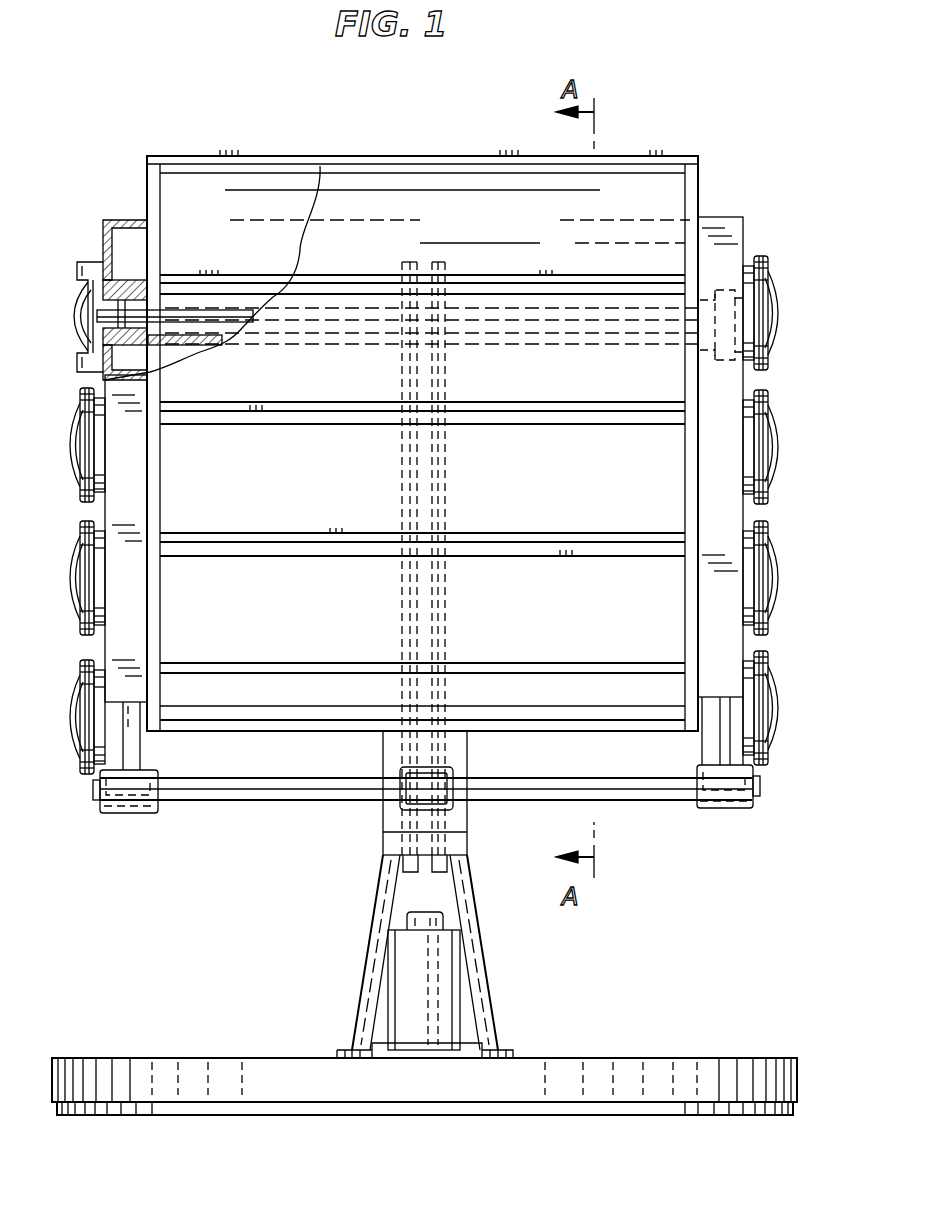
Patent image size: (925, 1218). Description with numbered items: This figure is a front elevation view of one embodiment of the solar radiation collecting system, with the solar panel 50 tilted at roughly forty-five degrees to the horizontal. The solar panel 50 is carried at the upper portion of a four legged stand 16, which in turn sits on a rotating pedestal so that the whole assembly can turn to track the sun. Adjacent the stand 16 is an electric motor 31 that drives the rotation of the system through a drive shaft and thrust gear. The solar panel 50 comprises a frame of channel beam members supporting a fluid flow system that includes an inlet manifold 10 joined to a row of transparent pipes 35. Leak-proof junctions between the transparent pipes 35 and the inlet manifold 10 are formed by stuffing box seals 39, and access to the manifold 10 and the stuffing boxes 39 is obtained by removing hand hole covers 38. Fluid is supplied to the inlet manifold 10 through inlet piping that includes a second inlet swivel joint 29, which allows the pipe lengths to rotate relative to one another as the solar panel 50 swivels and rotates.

The inlet manifold 10 is at (104, 645).
The four legged stand 16 is at (479, 931).
The second inlet swivel joint 29 is at (102, 274).
The electric motor 31 is at (397, 923).
The transparent pipes 35 is at (203, 316).
The hand hole covers 38 is at (72, 427).
The stuffing box seals 39 is at (127, 296).
The solar panel 50 is at (242, 806).